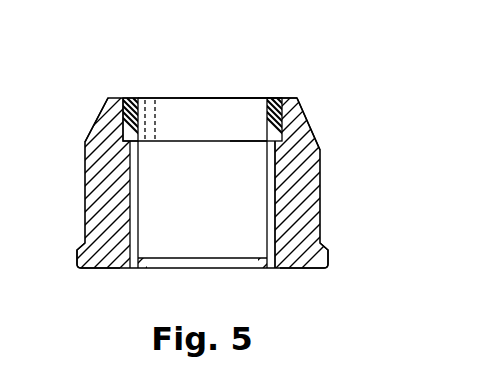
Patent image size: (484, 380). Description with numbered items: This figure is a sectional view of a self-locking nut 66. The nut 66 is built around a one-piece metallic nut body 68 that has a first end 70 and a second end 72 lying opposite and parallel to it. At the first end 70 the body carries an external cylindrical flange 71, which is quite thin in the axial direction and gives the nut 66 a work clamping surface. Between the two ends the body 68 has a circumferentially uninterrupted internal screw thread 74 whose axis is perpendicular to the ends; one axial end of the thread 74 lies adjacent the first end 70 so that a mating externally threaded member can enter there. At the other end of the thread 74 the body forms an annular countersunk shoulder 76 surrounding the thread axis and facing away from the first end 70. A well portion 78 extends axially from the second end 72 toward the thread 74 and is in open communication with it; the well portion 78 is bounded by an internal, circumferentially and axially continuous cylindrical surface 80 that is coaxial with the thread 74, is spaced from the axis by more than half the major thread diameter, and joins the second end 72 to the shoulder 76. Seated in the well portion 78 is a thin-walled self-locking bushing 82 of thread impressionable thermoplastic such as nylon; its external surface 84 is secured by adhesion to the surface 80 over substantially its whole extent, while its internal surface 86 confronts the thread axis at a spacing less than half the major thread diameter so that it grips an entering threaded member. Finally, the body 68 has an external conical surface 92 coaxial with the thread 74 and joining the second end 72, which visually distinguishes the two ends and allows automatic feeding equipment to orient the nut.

The nut 66 is at (335, 134).
The nut body 68 is at (308, 207).
The first end 70 is at (291, 268).
The external cylindrical flange 71 is at (84, 254).
The second end 72 is at (282, 100).
The internal screw thread 74 is at (268, 197).
The annular countersunk shoulder 76 is at (126, 137).
The well portion 78 is at (297, 106).
The internal cylindrical surface 80 is at (247, 110).
The self-locking bushing 82 is at (180, 108).
The external surface of bushing 84 is at (115, 98).
The internal surface of bushing 86 is at (215, 110).
The external conical surface 92 is at (98, 123).